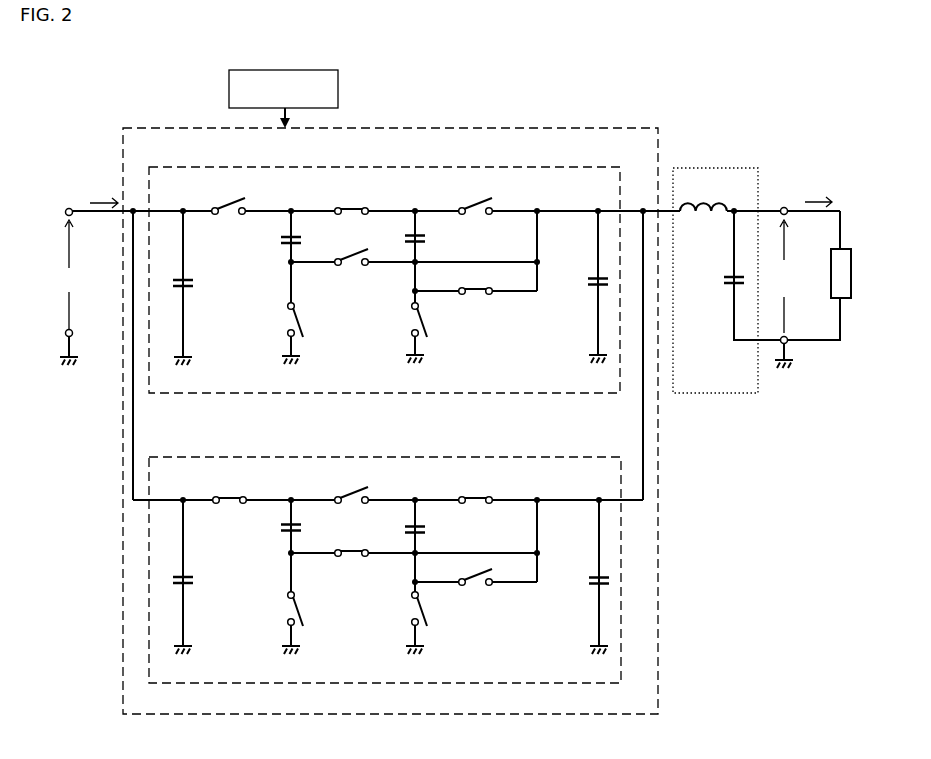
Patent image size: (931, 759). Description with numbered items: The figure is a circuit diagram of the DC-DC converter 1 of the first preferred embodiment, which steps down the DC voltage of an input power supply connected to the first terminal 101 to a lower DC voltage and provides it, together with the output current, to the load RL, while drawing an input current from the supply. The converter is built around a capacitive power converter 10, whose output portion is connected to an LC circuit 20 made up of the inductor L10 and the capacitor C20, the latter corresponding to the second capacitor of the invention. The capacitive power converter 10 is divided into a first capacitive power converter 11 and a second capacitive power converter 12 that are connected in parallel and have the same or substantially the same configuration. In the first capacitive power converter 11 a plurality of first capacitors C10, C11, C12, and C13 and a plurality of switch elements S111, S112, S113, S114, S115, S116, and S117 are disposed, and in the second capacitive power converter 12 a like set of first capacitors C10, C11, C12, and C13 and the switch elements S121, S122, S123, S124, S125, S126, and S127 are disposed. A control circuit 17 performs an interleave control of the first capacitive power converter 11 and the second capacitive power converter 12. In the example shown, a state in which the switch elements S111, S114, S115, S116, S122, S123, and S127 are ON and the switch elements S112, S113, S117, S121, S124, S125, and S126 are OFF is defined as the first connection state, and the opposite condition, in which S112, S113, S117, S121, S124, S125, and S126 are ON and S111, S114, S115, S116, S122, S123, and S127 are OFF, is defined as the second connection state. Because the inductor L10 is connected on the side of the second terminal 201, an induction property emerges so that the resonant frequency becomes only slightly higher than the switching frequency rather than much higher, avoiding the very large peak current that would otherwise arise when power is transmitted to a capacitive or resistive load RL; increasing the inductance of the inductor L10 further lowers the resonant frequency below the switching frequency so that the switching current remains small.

The DC-DC converter 1 is at (104, 66).
The capacitive power converter 10 is at (530, 127).
The first capacitive power converter 11 is at (543, 457).
The second capacitive power converter 12 is at (547, 167).
The control circuit 17 is at (338, 70).
The LC circuit 20 is at (733, 168).
The first terminal 101 is at (57, 201).
The second terminal 201 is at (786, 202).
The inductor L10 is at (703, 195).
The capacitor C20 is at (716, 270).
The load RL is at (851, 248).
The first capacitor C10 is at (200, 421).
The first capacitor C11 is at (272, 395).
The first capacitor C12 is at (436, 395).
The first capacitor C13 is at (578, 433).
The switch element S111 is at (223, 511).
The switch element S112 is at (267, 609).
The switch element S113 is at (345, 506).
The switch element S114 is at (345, 564).
The switch element S115 is at (388, 609).
The switch element S116 is at (465, 511).
The switch element S117 is at (488, 588).
The switch element S121 is at (220, 217).
The switch element S122 is at (270, 320).
The switch element S123 is at (344, 222).
The switch element S124 is at (344, 269).
The switch element S125 is at (394, 320).
The switch element S126 is at (466, 217).
The switch element S127 is at (484, 303).